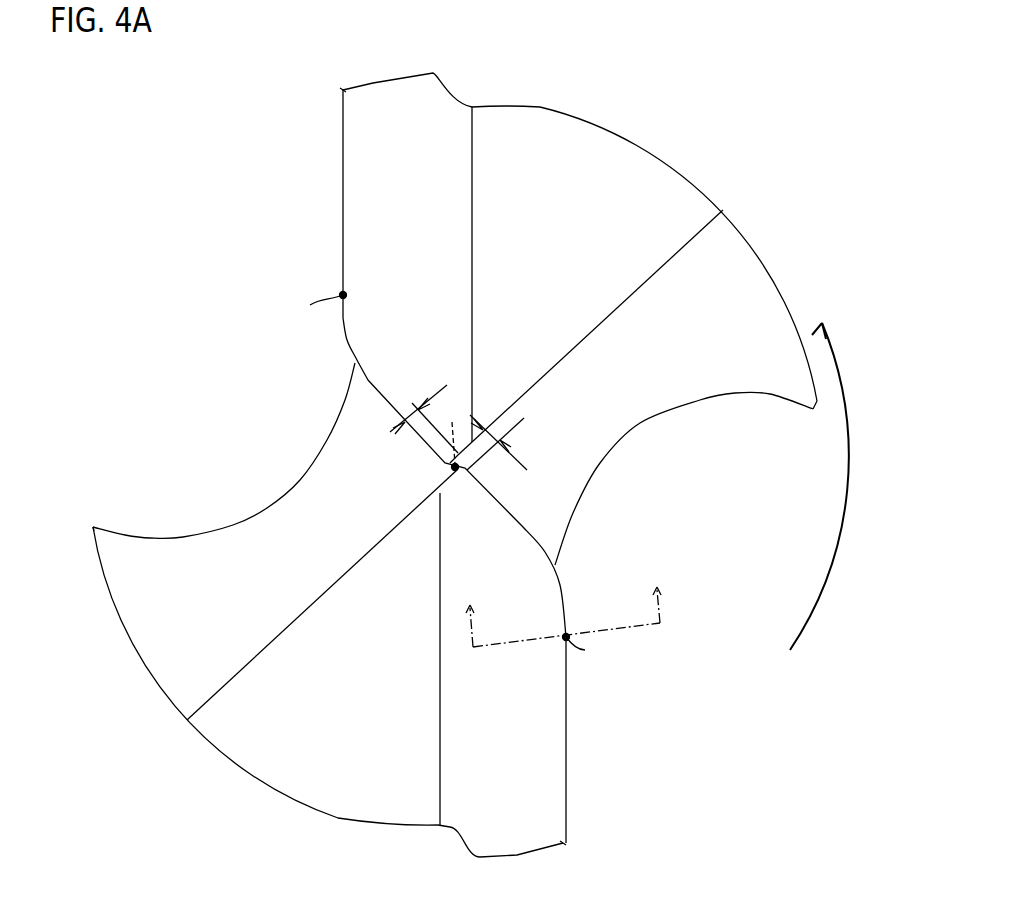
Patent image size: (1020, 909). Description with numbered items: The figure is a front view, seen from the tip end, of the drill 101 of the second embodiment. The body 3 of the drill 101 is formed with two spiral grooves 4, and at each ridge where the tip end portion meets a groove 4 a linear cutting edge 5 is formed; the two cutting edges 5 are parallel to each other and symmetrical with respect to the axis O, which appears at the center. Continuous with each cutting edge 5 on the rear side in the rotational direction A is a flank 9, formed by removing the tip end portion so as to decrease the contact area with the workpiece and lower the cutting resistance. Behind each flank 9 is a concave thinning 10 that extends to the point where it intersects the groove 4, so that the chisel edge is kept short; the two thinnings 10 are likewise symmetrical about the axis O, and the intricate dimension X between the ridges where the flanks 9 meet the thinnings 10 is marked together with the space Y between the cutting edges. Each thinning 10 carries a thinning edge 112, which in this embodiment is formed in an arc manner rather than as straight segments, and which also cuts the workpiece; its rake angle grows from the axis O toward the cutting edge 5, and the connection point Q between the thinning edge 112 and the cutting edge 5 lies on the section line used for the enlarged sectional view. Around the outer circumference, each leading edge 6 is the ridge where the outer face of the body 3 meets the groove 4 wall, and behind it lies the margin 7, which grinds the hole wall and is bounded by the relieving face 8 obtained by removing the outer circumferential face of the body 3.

The body 3 is at (763, 172).
The groove 4 is at (228, 523).
The cutting edge 5 is at (343, 165).
The leading edge 6 is at (343, 90).
The margin 7 is at (373, 83).
The relieving face 8 is at (572, 118).
The flank 9 is at (605, 157).
The thinning 10 is at (158, 577).
The drill 101 is at (772, 103).
The thinning edge 112 is at (390, 406).